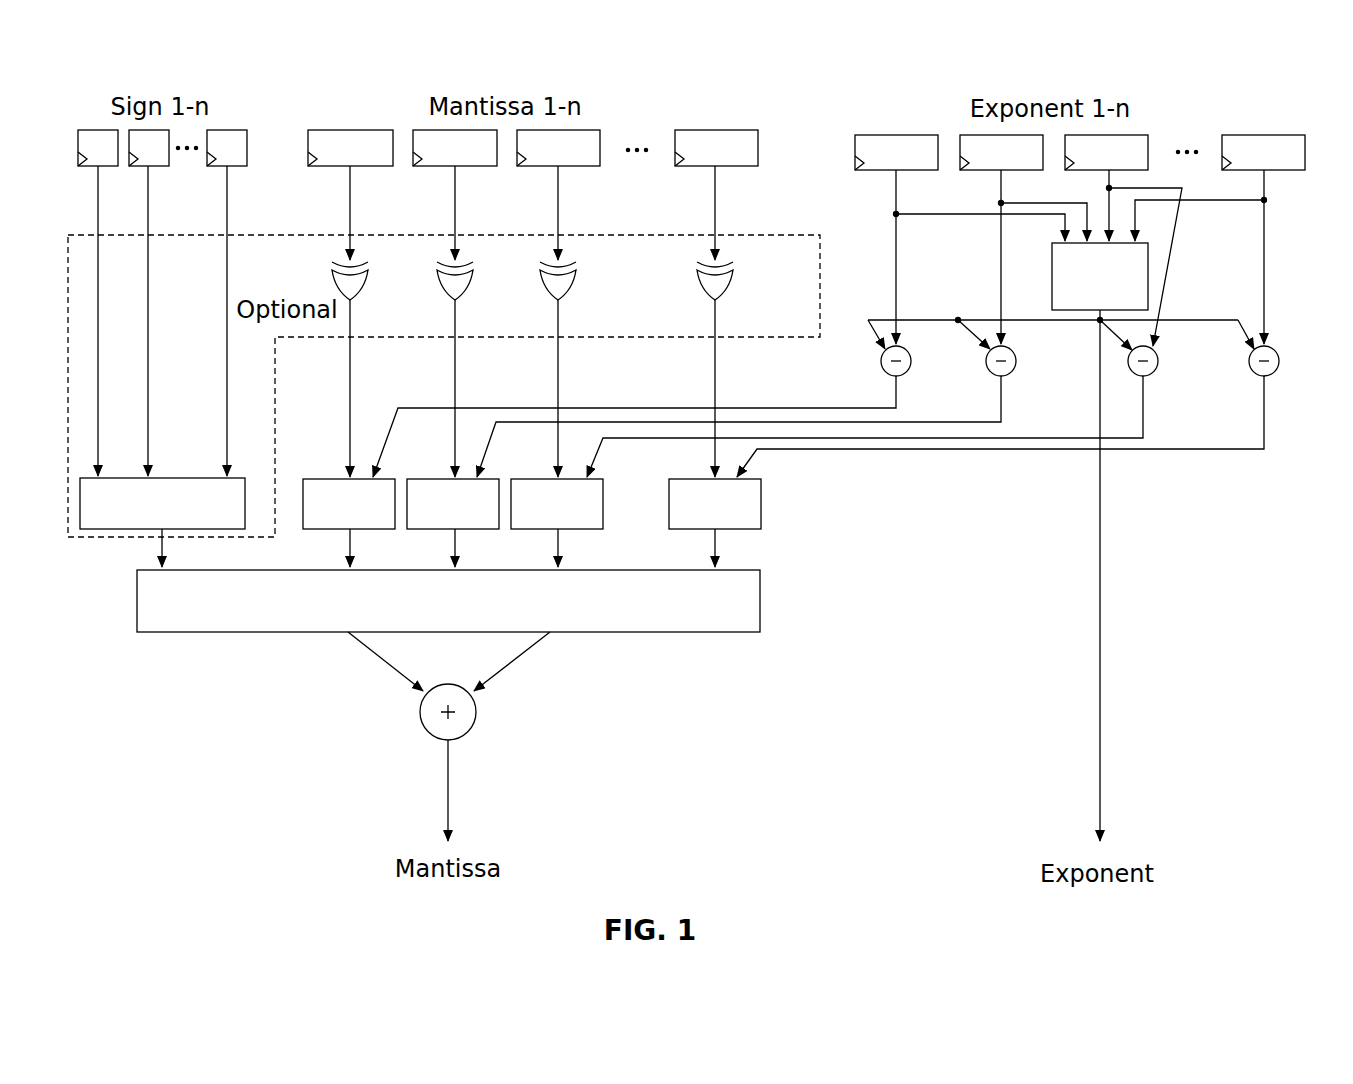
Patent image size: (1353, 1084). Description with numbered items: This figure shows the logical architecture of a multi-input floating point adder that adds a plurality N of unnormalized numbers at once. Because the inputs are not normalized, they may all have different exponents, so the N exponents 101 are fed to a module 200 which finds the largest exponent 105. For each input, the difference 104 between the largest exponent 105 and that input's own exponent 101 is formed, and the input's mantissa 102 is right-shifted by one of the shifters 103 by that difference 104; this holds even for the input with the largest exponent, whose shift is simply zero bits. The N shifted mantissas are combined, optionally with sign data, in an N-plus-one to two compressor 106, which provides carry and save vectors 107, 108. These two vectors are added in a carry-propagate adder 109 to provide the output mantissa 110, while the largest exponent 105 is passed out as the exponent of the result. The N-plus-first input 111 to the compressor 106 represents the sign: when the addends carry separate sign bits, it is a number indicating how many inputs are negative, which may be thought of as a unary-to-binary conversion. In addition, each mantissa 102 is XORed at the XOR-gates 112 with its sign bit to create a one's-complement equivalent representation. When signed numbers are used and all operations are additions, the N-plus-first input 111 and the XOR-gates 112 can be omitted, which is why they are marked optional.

The exponent 101 is at (885, 172).
The mantissa 102 is at (333, 168).
The shifter 103 is at (357, 531).
The difference 104 is at (905, 373).
The largest exponent 105 is at (1099, 720).
The (N+1):2 compressor 106 is at (693, 638).
The carry vector 107 is at (368, 658).
The save vector 108 is at (520, 660).
The carry-propagate adder 109 is at (462, 738).
The output mantissa 110 is at (450, 817).
The (N+1)th input 111 is at (157, 545).
The XOR-gate 112 is at (360, 288).
The module 200 is at (1148, 288).